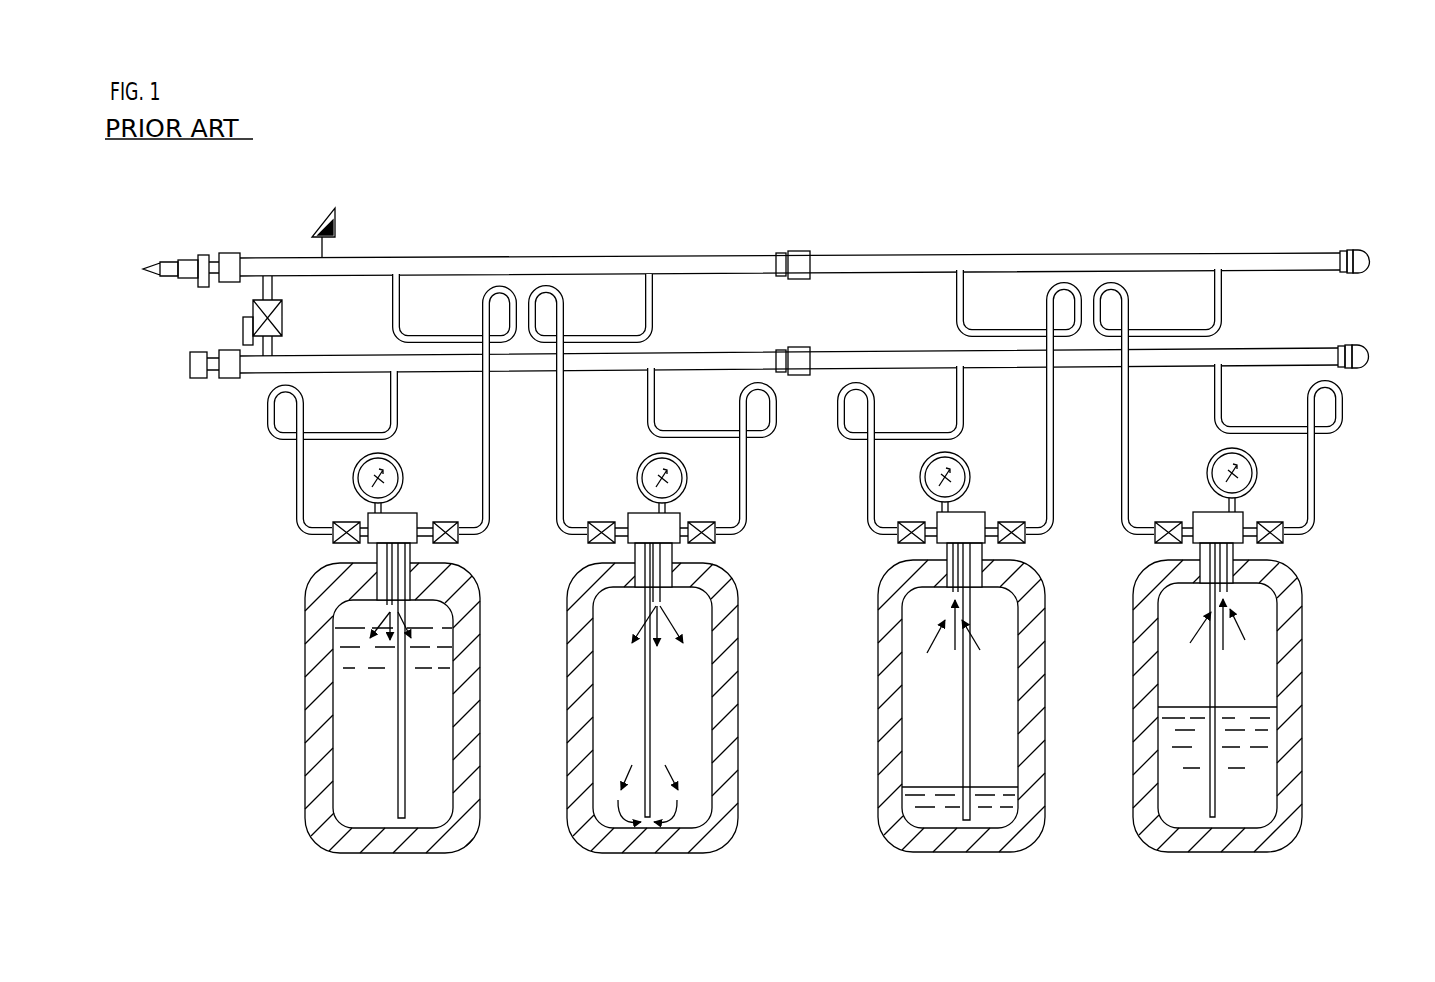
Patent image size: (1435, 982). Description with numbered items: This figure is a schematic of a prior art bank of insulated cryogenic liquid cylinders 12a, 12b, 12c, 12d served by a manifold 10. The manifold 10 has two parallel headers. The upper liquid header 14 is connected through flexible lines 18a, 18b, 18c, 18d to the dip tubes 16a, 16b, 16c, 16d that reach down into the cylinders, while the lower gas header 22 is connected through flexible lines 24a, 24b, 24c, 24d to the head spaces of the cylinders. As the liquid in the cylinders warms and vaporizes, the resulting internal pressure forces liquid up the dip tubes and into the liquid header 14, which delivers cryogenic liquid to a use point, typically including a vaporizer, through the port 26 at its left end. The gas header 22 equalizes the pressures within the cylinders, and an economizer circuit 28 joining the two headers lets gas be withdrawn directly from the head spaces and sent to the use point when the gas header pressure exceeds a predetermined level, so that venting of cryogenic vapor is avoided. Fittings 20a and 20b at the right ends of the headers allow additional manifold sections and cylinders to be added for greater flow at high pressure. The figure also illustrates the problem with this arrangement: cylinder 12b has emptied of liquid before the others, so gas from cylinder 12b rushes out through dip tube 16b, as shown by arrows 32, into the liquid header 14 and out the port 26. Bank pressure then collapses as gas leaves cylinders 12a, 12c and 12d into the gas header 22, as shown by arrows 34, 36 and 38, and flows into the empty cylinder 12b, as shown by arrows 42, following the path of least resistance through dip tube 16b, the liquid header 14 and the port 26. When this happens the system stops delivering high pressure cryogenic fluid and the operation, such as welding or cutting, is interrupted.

The manifold 10 is at (871, 163).
The cryogenic liquid cylinder 12a is at (372, 657).
The cryogenic liquid cylinder 12b is at (660, 656).
The cryogenic liquid cylinder 12c is at (961, 656).
The cryogenic liquid cylinder 12d is at (1231, 653).
The liquid header 14 is at (535, 257).
The dip tube 16a is at (408, 600).
The dip tube 16b is at (648, 680).
The dip tube 16c is at (968, 692).
The dip tube 16d is at (1215, 668).
The flexible line 18a is at (490, 398).
The flexible line 18b is at (556, 460).
The flexible line 18c is at (1053, 452).
The flexible line 18d is at (1123, 465).
The fitting 20a is at (1362, 250).
The fitting 20b is at (1360, 345).
The gas header 22 is at (693, 355).
The flexible line 24a is at (297, 470).
The flexible line 24b is at (746, 465).
The flexible line 24c is at (868, 495).
The flexible line 24d is at (1316, 463).
The port 26 is at (173, 260).
The economizer circuit 28 is at (243, 325).
The arrows 32 is at (690, 797).
The arrows 34 is at (388, 608).
The arrows 36 is at (945, 630).
The arrows 38 is at (1227, 607).
The arrows 42 is at (633, 622).